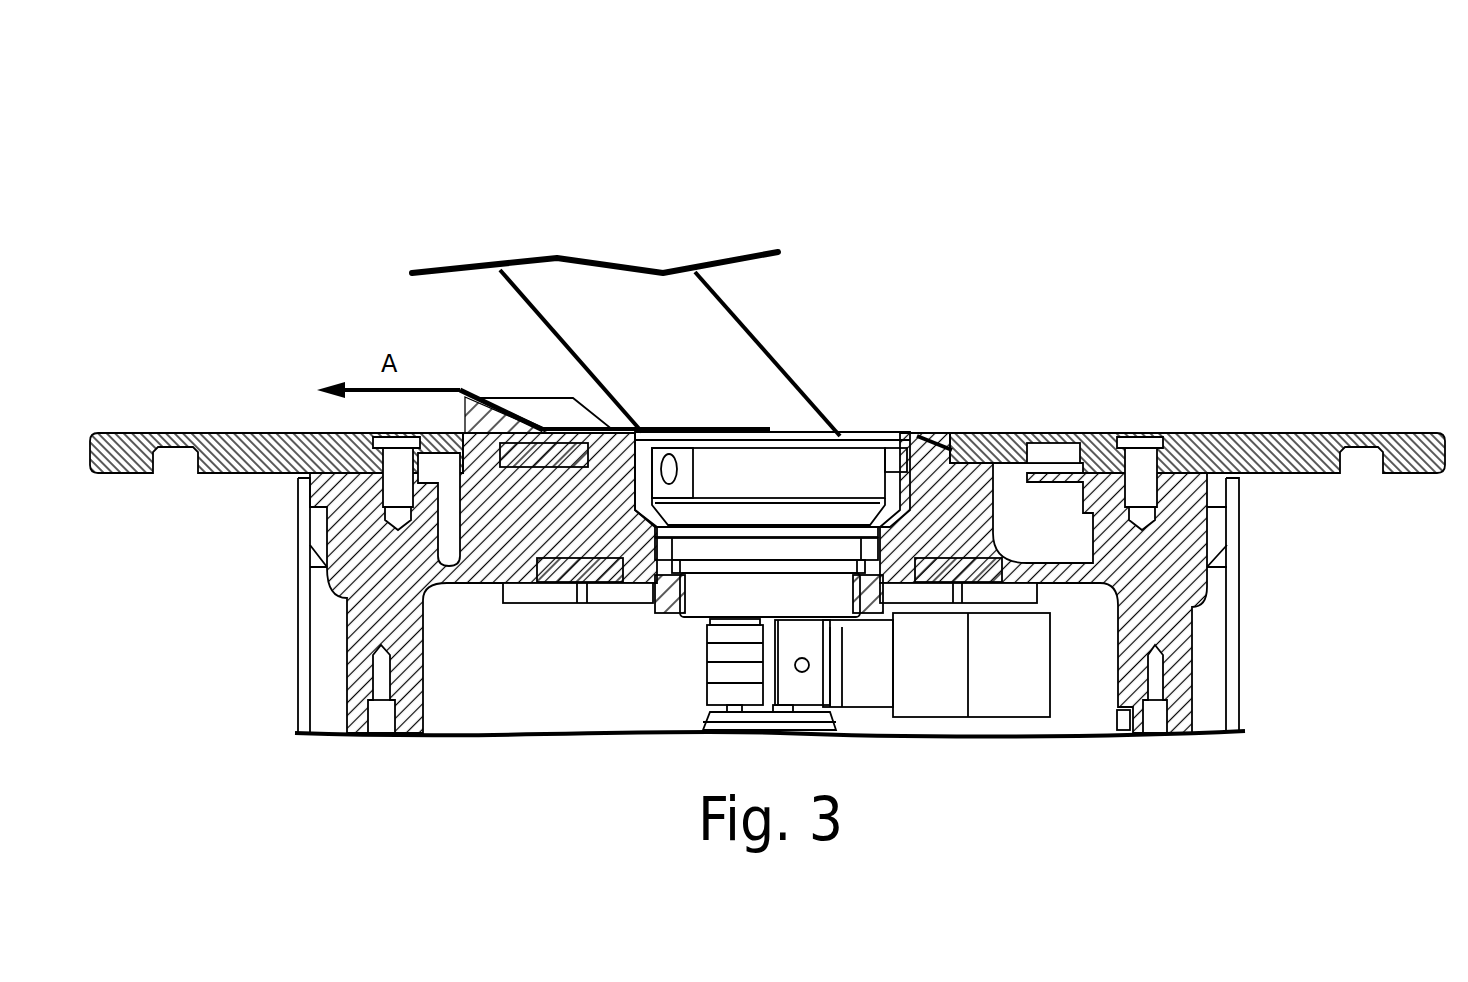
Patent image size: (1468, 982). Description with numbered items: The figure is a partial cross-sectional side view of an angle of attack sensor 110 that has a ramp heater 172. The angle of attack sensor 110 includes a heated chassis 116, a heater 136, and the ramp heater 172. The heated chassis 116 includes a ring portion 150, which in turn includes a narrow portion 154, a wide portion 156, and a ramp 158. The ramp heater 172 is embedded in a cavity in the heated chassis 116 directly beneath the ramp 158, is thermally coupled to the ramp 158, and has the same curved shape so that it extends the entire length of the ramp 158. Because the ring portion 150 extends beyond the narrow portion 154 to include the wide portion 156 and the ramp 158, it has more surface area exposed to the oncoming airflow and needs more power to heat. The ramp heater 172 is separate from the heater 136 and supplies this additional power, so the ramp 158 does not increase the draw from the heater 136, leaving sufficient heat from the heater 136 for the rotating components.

The angle of attack sensor 110 is at (278, 152).
The heated chassis 116 is at (370, 573).
The heater 136 is at (568, 567).
The ring portion 150 is at (929, 405).
The narrow portion 154 is at (937, 437).
The wide portion 156 is at (590, 430).
The ramp 158 is at (540, 410).
The ramp heater 172 is at (532, 457).